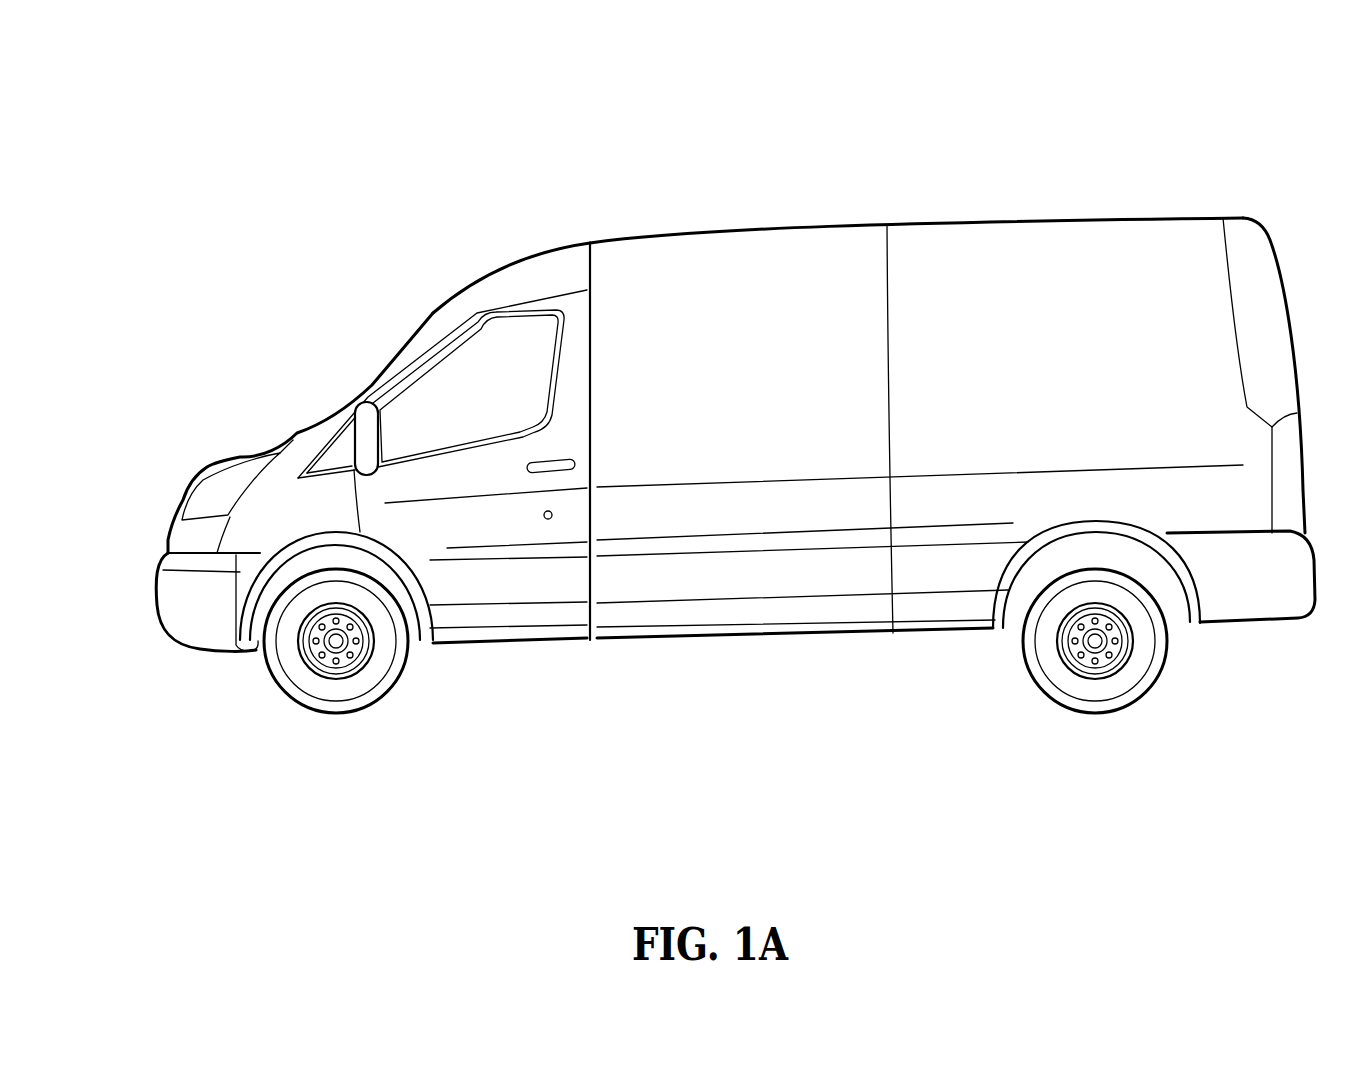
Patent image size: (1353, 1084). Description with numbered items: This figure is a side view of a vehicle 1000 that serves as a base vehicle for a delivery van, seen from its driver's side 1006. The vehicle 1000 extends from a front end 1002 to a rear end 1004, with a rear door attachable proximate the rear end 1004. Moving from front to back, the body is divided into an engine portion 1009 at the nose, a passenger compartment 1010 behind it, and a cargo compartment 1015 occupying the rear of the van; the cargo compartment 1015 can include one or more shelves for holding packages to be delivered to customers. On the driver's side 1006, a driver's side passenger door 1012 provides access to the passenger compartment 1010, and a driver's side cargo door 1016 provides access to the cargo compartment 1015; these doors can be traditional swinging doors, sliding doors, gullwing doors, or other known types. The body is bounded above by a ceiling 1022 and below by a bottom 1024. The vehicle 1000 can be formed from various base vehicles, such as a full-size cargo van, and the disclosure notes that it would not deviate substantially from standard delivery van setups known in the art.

The vehicle 1000 is at (681, 118).
The front end 1002 is at (157, 592).
The rear end 1004 is at (1320, 603).
The driver's side 1006 is at (707, 537).
The engine portion 1009 is at (240, 452).
The passenger compartment 1010 is at (437, 317).
The driver's side passenger door 1012 is at (487, 537).
The cargo compartment 1015 is at (1128, 218).
The driver's side cargo door 1016 is at (797, 495).
The ceiling 1022 is at (922, 222).
The bottom 1024 is at (913, 628).